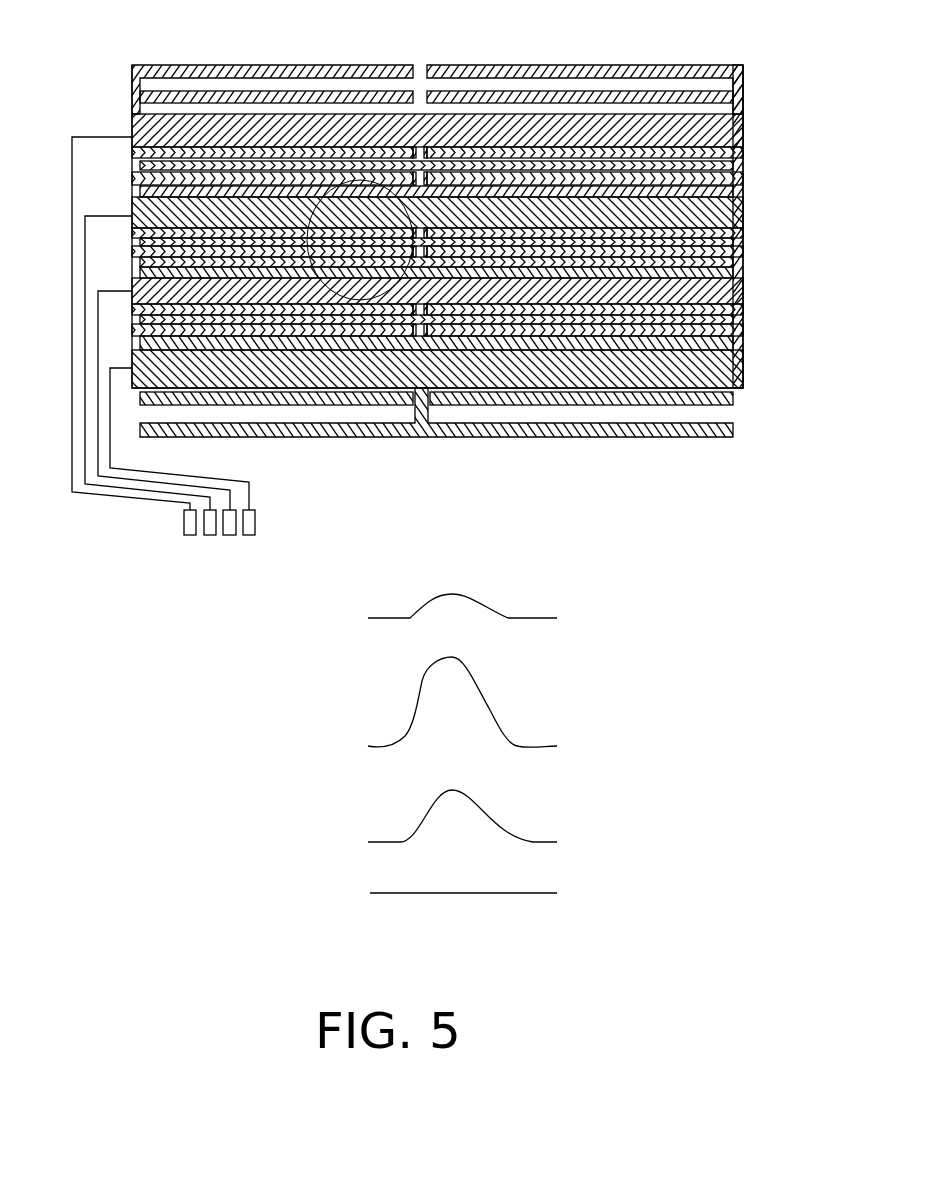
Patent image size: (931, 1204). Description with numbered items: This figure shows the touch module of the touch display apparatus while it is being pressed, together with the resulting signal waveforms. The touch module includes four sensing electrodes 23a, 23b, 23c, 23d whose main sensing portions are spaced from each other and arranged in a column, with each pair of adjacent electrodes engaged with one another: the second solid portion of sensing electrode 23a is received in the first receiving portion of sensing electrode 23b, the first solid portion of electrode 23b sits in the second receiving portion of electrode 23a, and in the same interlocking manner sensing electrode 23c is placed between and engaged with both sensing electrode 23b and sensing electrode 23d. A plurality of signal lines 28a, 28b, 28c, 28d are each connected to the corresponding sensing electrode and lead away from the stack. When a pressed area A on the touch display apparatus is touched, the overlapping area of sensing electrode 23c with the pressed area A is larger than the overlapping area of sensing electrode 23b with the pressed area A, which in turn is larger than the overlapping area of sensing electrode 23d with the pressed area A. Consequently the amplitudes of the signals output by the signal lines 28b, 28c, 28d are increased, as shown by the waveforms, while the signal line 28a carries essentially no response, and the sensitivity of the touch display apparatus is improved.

The sensing electrode 23a is at (469, 371).
The sensing electrode 23b is at (467, 291).
The sensing electrode 23c is at (466, 209).
The sensing electrode 23d is at (466, 131).
The signal line 28a is at (249, 523).
The signal line 28b is at (229, 528).
The signal line 28c is at (210, 528).
The signal line 28d is at (190, 523).
The pressed area A is at (362, 178).